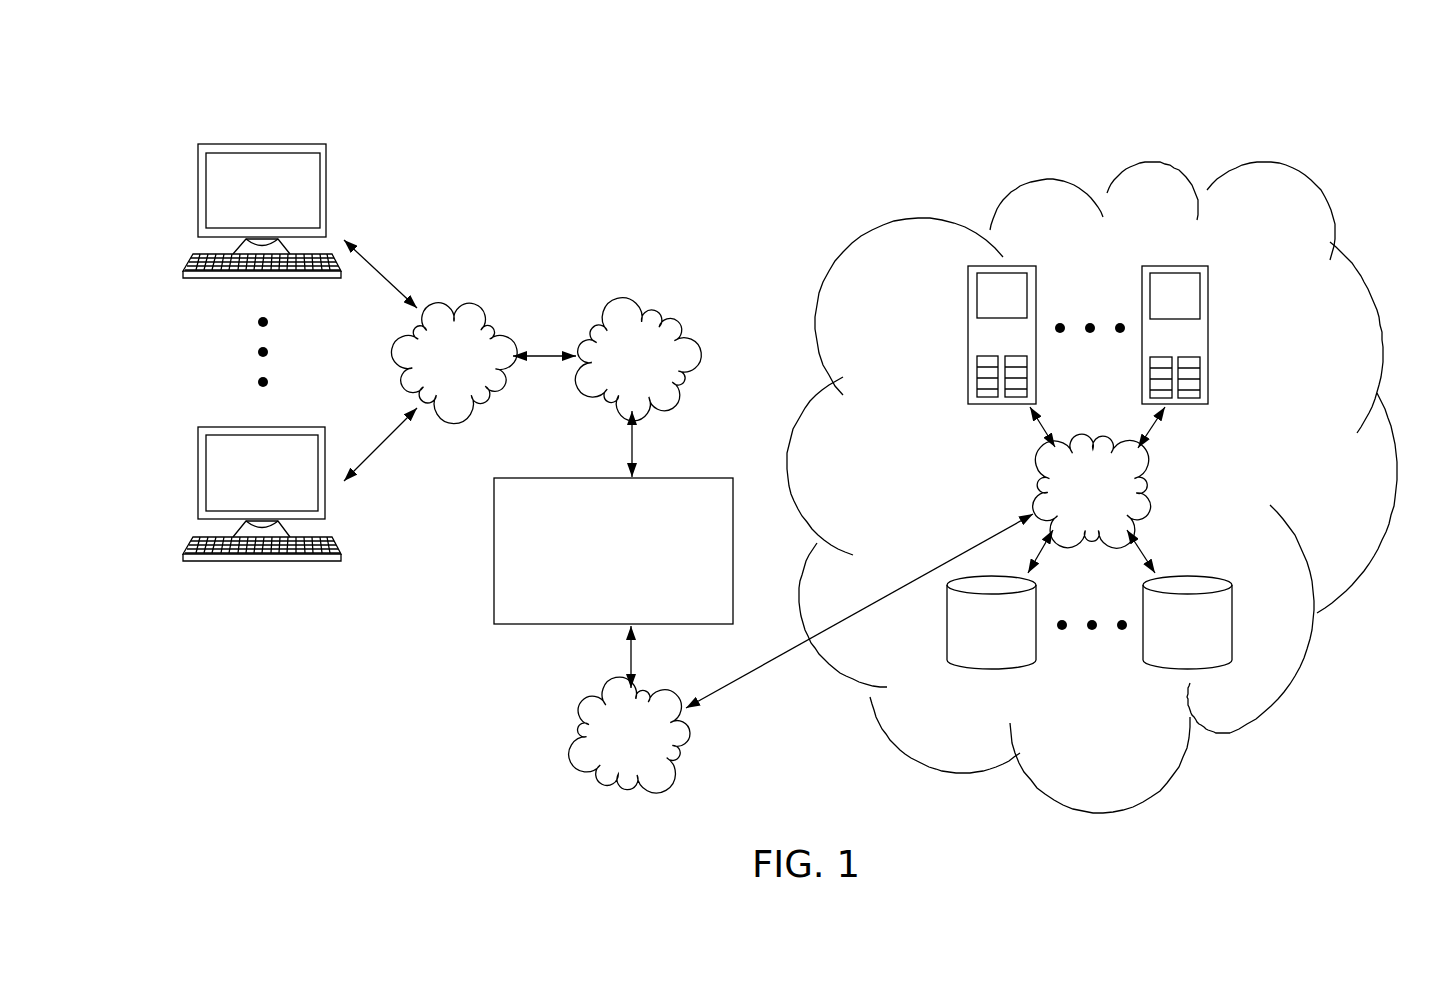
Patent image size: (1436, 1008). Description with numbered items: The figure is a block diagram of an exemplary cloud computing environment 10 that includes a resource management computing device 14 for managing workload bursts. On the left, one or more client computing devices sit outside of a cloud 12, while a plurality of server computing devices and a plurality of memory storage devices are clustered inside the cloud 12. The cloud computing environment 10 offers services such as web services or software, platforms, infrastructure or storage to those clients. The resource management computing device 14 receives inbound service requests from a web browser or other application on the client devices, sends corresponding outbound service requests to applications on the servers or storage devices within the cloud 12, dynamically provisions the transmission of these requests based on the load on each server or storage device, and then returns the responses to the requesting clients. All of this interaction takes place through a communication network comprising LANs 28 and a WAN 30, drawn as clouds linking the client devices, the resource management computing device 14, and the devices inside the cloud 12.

The cloud computing environment 10 is at (656, 148).
The cloud 12 is at (895, 232).
The resource management computing device 14 is at (613, 551).
The LANs 28 is at (771, 425).
The WAN 30 is at (635, 545).